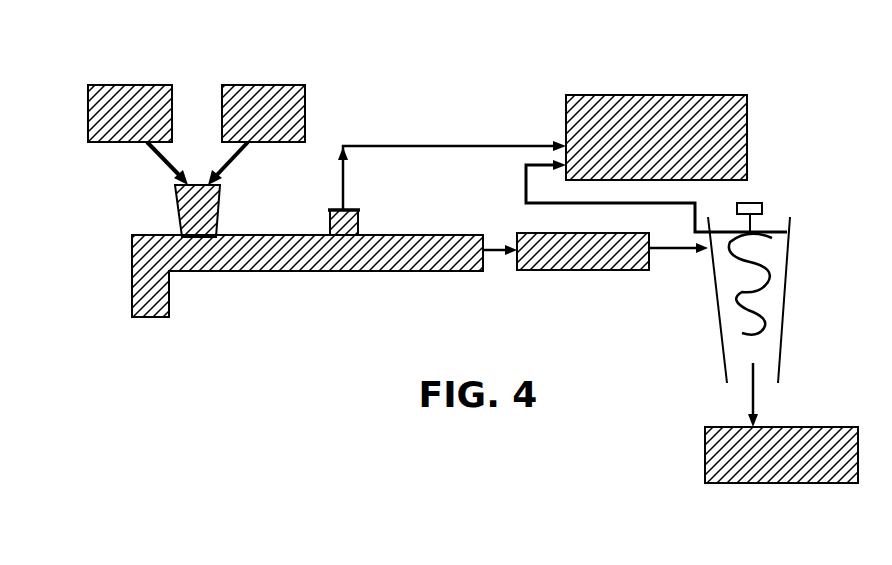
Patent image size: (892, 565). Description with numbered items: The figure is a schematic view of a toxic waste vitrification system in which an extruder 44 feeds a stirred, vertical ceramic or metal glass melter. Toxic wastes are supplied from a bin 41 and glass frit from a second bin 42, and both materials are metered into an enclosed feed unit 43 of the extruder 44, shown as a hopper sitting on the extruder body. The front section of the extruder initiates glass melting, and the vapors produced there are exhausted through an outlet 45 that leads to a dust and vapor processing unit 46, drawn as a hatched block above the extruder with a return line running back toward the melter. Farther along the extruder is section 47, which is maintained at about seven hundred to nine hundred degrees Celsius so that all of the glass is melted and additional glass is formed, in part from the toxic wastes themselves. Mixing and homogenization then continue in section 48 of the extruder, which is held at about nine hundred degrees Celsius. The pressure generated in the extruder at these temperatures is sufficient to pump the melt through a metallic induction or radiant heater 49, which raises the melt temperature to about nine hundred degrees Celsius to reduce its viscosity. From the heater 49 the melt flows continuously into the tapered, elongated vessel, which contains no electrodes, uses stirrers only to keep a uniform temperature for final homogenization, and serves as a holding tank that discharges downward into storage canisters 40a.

The bin 41 is at (107, 122).
The bin 42 is at (287, 103).
The enclosed feed unit 43 is at (215, 188).
The extruder 44 is at (276, 258).
The outlet 45 is at (428, 142).
The dust and vapor processing unit 46 is at (723, 148).
The section of the extruder 47 is at (383, 240).
The section of the extruder 48 is at (462, 242).
The metallic induction or radiant heater 49 is at (585, 262).
The storage canister 40a is at (725, 452).